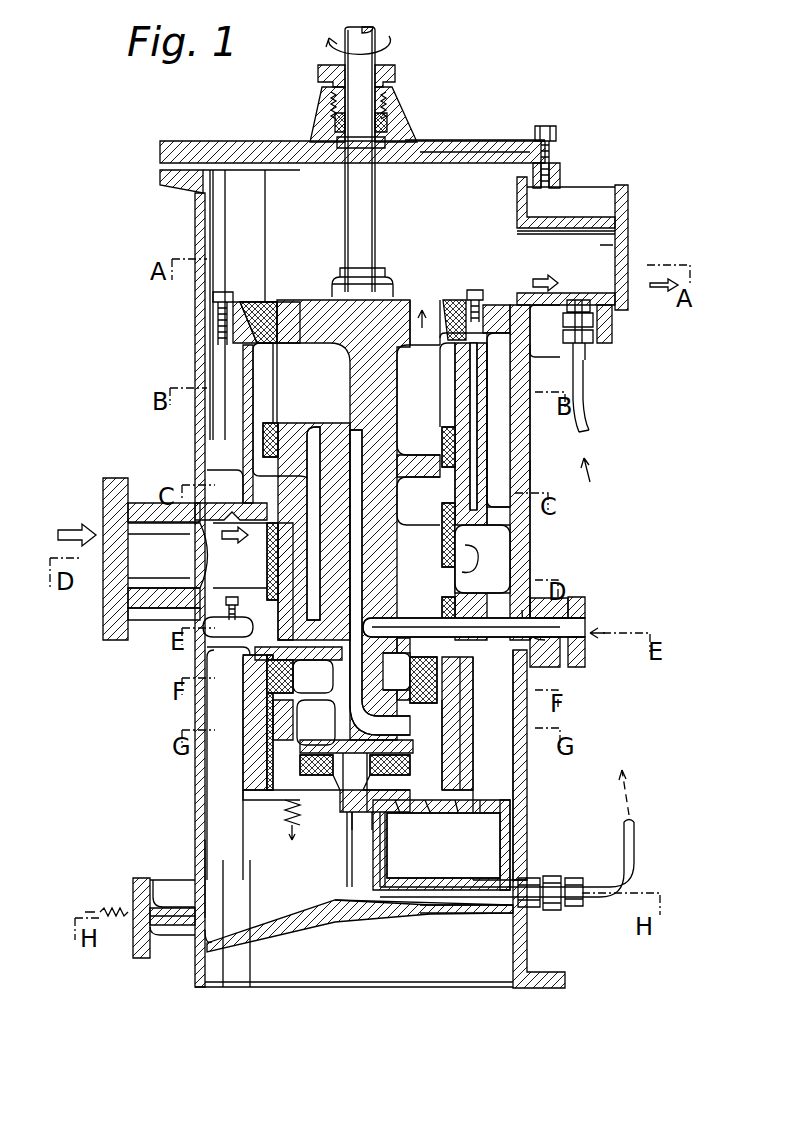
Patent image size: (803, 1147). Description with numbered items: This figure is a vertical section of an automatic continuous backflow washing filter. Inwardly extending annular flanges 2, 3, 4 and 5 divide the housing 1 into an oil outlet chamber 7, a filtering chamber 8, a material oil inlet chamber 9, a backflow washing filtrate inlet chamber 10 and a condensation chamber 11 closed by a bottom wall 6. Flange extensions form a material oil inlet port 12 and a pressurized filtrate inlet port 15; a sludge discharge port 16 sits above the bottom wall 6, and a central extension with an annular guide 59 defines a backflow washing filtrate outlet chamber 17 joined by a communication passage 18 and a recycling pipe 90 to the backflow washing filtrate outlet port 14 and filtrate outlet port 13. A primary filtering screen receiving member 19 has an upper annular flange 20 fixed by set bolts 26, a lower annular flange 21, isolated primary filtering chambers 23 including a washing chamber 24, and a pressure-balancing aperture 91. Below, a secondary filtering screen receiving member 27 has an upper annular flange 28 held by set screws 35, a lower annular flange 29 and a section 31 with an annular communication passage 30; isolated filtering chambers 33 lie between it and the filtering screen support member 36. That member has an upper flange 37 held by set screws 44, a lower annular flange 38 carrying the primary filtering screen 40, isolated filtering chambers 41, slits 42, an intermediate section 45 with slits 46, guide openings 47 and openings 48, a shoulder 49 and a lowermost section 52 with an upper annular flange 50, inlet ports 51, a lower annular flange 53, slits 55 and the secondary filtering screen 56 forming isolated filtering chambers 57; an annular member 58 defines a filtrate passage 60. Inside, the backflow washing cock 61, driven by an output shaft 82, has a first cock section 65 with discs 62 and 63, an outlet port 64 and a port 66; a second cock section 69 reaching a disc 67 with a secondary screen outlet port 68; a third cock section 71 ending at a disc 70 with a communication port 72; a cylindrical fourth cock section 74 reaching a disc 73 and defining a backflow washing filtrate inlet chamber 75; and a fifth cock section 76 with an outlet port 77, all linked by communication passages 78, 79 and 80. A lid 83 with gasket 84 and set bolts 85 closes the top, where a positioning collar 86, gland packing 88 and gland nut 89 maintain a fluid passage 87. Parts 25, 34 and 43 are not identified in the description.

The housing 1 is at (195, 198).
The annular flange 2 is at (262, 312).
The annular flange 3 is at (530, 508).
The annular flange 4 is at (205, 628).
The annular flange 5 is at (237, 662).
The bottom wall 6 is at (332, 922).
The oil outlet chamber 7 is at (288, 163).
The filtering chamber 8 is at (210, 328).
The material oil inlet chamber 9 is at (531, 575).
The backflow washing filtrate inlet chamber 10 is at (500, 765).
The condensation chamber 11 is at (203, 850).
The material oil inlet port 12 is at (150, 540).
The filtrate outlet port 13 is at (622, 240).
The backflow washing filtrate outlet port 14 is at (576, 300).
The pressurized filtrate inlet port 15 is at (590, 620).
The sludge discharge port 16 is at (142, 895).
The backflow washing filtrate outlet chamber 17 is at (394, 910).
The communication passage 18 is at (432, 900).
The primary filtering screen receiving member 19 is at (563, 466).
The upper annular flange 20 is at (588, 352).
The lower annular flange 21 is at (484, 559).
The primary filtering chamber 23 is at (582, 385).
The isolated filtering chamber 24 is at (225, 487).
The wall 25 is at (549, 331).
The set bolts 26 is at (228, 296).
The secondary filtering screen receiving member 27 is at (215, 862).
The upper annular flange 28 is at (568, 645).
The lower annular flange 29 is at (240, 678).
The annular communication passage 30 is at (460, 702).
The section 31 is at (230, 650).
The isolated filtering chambers 33 is at (255, 790).
The pipe wall 34 is at (227, 607).
The set screws 35 is at (228, 608).
The filtering screen support member 36 is at (255, 435).
The upper flange 37 is at (440, 358).
The lower annular flange 38 is at (488, 481).
The primary filtering screen 40 is at (508, 350).
The isolated filtering chambers 41 is at (418, 447).
The slits 42 is at (456, 450).
The wall 43 is at (487, 292).
The set screws 44 is at (478, 297).
The intermediate section 45 is at (440, 546).
The slits 46 is at (472, 548).
The guide openings 47 is at (582, 645).
The openings 48 is at (458, 736).
The shoulder 49 is at (300, 692).
The upper annular flange 50 is at (243, 700).
The backflow washing filtrate inlet ports 51 is at (250, 735).
The lowermost frame member section 52 is at (410, 692).
The lower annular flange 53 is at (445, 832).
The slits 55 is at (422, 790).
The secondary filtering screen 56 is at (478, 812).
The isolated filtering chambers 57 is at (462, 800).
The annular member 58 is at (396, 832).
The annular guide 59 is at (365, 849).
The filtrate passage 60 is at (336, 905).
The rotary backflow washing cock 61 is at (343, 280).
The upper disc 62 is at (455, 310).
The lower disc 63 is at (437, 485).
The backflow washing filtrate outlet port 64 is at (310, 343).
The first cock section 65 is at (368, 386).
The backflow washing filtrate outlet port 66 is at (425, 310).
The disc 67 is at (530, 655).
The secondary screen backflow washing filtrate outlet port 68 is at (250, 472).
The second cock section 69 is at (290, 468).
The disc 70 is at (456, 770).
The third cock section 71 is at (225, 677).
The backflow washing filtrate communication port 72 is at (468, 790).
The disc 73 is at (465, 818).
The fourth cock section 74 is at (288, 790).
The backflow washing filtrate inlet chamber 75 is at (250, 770).
The fifth cock section 76 is at (312, 790).
The backflow washing filtrate outlet port 77 is at (325, 802).
The communication passage 78 is at (332, 414).
The communication passage 79 is at (340, 745).
The communication passage 80 is at (270, 555).
The output shaft 82 is at (362, 198).
The lid 83 is at (440, 152).
The gasket 84 is at (563, 176).
The set bolts 85 is at (557, 134).
The positioning collar 86 is at (398, 143).
The fluid passage 87 is at (385, 795).
The gland packing 88 is at (398, 108).
The gland nut 89 is at (396, 70).
The backflow washing filtrate recycling pipe 90 is at (636, 828).
The aperture 91 is at (577, 454).